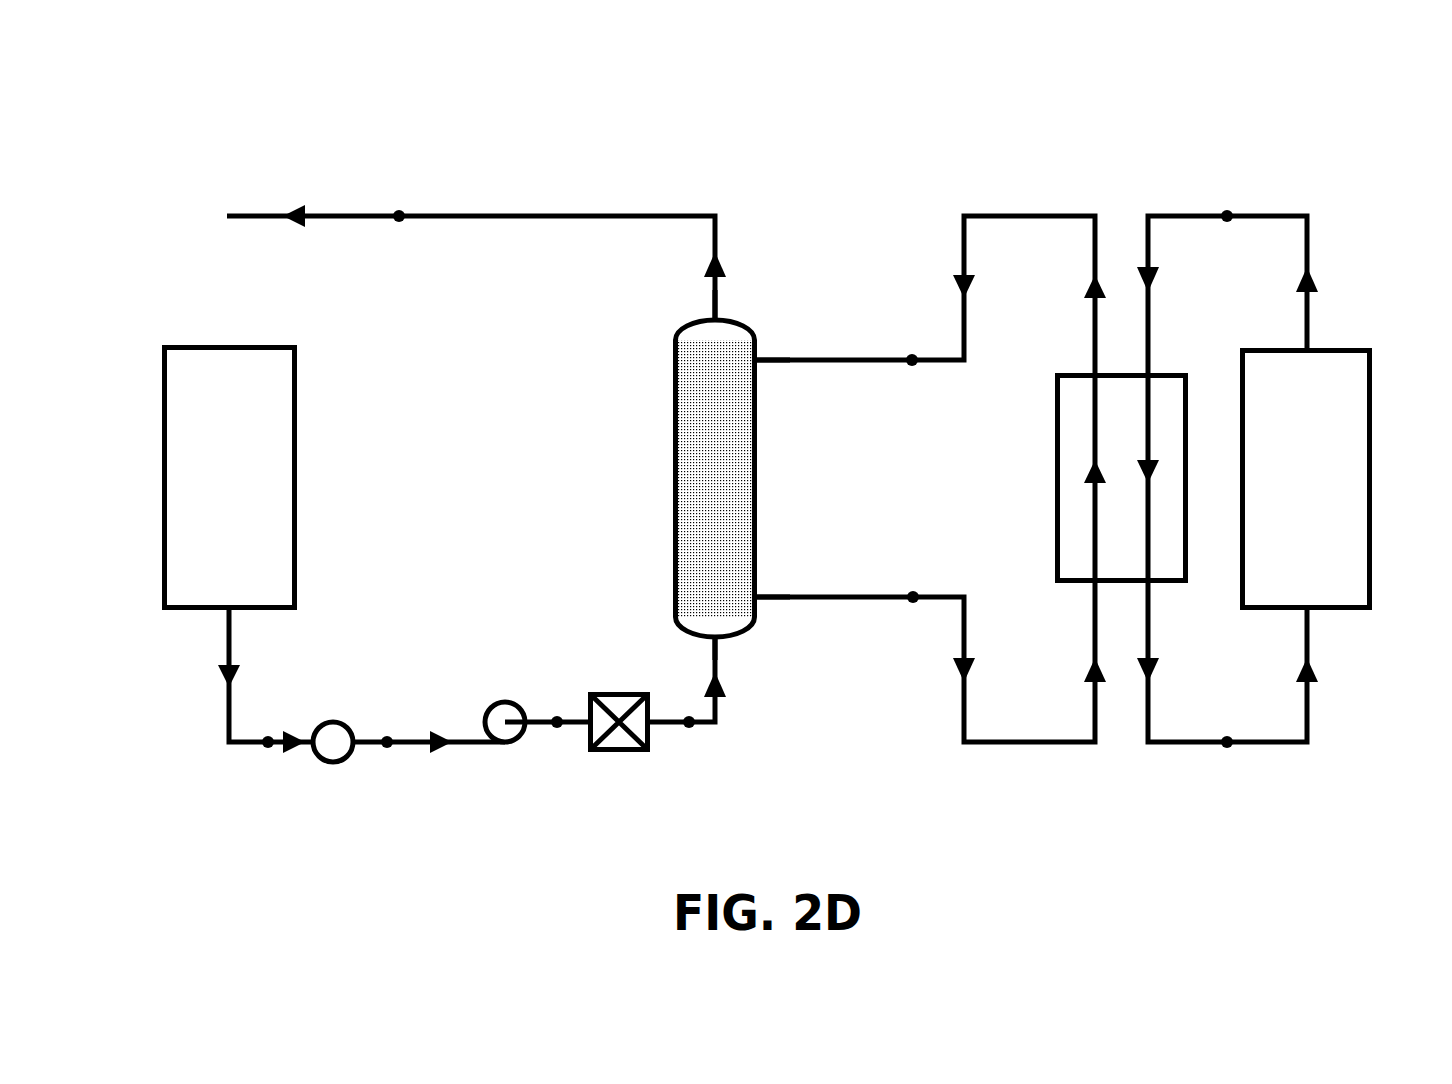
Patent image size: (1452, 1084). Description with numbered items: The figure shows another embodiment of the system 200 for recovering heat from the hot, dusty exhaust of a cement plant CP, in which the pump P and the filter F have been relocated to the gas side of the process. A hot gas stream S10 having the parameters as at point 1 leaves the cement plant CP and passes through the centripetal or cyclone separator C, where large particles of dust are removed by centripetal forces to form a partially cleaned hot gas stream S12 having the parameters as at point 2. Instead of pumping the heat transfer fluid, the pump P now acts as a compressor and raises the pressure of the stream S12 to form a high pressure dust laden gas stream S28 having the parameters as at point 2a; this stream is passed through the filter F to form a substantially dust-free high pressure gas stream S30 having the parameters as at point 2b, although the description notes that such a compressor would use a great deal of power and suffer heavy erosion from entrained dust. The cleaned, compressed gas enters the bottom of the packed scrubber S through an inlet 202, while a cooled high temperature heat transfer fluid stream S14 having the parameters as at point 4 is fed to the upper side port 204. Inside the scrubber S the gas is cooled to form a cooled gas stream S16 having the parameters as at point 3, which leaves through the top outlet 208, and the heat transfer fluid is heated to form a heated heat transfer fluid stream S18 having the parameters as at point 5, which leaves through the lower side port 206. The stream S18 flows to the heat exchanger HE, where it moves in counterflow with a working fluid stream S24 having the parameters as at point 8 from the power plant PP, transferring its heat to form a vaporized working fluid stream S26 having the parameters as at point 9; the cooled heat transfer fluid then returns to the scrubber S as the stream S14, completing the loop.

The system 200 is at (751, 364).
The separator inlet 202 is at (725, 640).
The separator vapor outlet 204 is at (757, 365).
The separator liquid outlet 206 is at (757, 597).
The separator top outlet 208 is at (717, 322).
The point 1 is at (268, 759).
The point 2 is at (387, 759).
The point 2a is at (558, 740).
The point 2b is at (689, 740).
The point 3 is at (399, 202).
The point 4 is at (911, 347).
The point 5 is at (912, 614).
The point 8 is at (1226, 199).
The point 9 is at (1226, 758).
The hot gas stream S10 is at (245, 747).
The partially cleaned hot gas stream S12 is at (417, 747).
The cooled high temperature heat transfer fluid stream S14 is at (1023, 213).
The cooled gas stream S16 is at (425, 220).
The heated high temperature heat transfer fluid stream S18 is at (1025, 745).
The working fluid stream S24 is at (1265, 213).
The vaporized working fluid stream S26 is at (1265, 745).
The high pressure dust laden gas stream S28 is at (540, 720).
The substantially dust-free high pressure gas stream S30 is at (665, 723).
The cement plant CP is at (257, 478).
The centripetal separator C is at (333, 766).
The pump P is at (505, 702).
The filter F is at (619, 702).
The scrubber S is at (731, 478).
The heat exchanger HE is at (1089, 479).
The power plant PP is at (1337, 479).